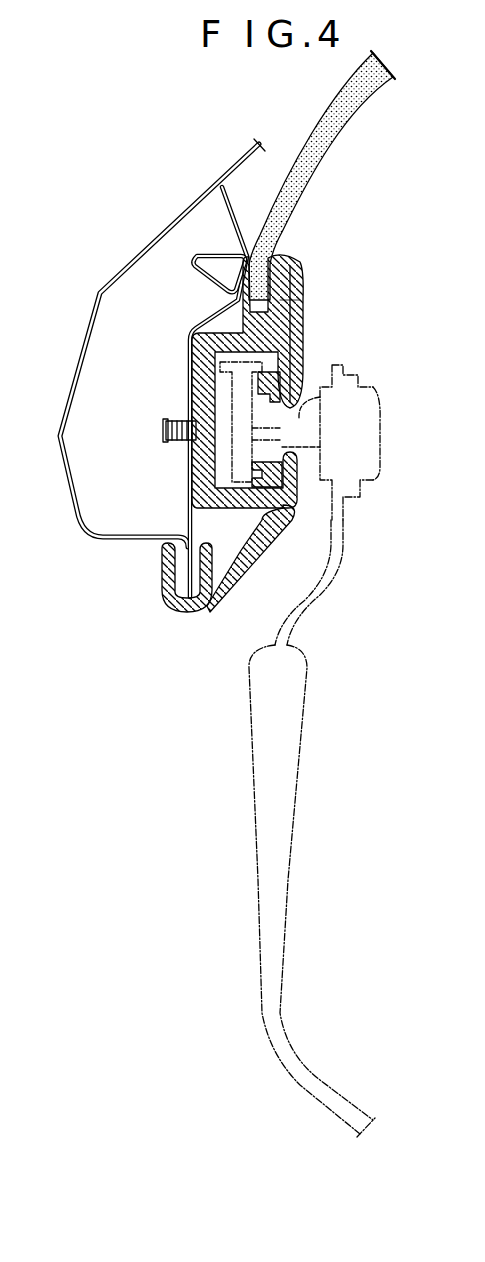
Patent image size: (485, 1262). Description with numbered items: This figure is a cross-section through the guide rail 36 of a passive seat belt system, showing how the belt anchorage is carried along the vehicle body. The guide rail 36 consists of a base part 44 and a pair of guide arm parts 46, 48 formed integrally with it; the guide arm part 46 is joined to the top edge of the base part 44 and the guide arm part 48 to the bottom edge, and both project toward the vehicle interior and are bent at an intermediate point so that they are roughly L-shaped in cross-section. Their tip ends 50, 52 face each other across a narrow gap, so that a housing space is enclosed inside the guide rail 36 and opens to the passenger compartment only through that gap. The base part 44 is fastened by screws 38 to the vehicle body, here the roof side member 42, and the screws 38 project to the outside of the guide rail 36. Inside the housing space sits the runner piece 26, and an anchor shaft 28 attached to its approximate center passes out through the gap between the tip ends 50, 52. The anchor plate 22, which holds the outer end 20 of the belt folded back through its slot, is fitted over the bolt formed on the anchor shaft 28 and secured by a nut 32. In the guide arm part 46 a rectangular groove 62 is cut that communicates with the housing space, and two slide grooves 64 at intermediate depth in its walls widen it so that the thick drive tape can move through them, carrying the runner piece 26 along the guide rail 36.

The outer end of the belt 20 is at (303, 732).
The anchor plate 22 is at (312, 574).
The runner piece 26 is at (230, 461).
The anchor shaft 28 is at (318, 410).
The nut 32 is at (371, 491).
The guide rail 36 is at (280, 350).
The screws 38 is at (163, 428).
The roof side member 42 is at (125, 543).
The base part 44 is at (205, 382).
The guide arm part 46 is at (278, 326).
The guide arm part 48 is at (275, 493).
The tip end 50 is at (250, 422).
The tip end 52 is at (319, 455).
The rectangular groove 62 is at (228, 352).
The slide grooves 64 is at (288, 376).